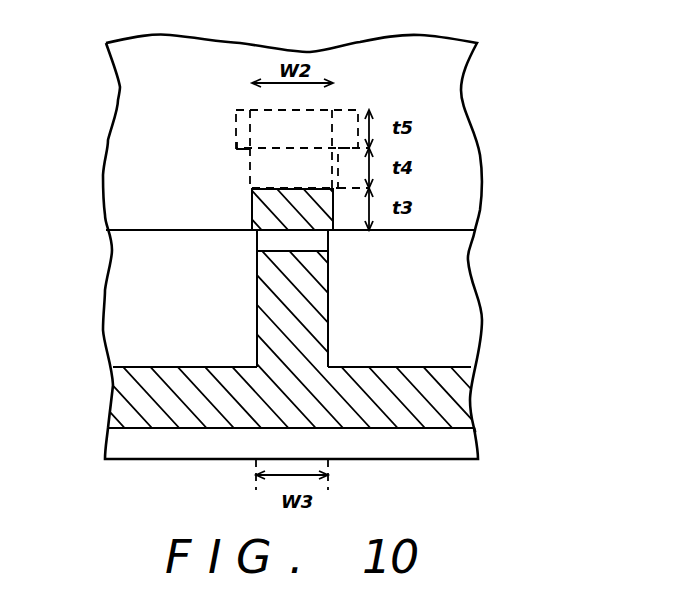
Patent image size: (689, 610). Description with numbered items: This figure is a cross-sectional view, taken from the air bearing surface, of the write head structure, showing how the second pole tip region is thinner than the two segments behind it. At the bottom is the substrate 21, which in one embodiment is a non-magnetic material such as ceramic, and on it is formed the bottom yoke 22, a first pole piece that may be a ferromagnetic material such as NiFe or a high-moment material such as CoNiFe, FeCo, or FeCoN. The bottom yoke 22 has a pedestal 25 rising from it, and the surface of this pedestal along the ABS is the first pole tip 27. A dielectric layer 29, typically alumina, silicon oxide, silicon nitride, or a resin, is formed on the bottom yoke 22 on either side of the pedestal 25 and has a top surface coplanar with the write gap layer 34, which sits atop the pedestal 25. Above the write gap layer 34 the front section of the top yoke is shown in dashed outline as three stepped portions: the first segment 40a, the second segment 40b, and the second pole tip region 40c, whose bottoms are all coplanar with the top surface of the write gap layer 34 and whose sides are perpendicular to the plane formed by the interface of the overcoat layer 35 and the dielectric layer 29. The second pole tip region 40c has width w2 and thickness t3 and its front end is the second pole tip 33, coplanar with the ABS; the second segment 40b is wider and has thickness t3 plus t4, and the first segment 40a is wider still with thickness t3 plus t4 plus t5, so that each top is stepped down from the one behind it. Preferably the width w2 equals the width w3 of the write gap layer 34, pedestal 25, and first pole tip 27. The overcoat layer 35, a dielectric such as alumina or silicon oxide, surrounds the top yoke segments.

The substrate 21 is at (450, 438).
The bottom yoke 22 is at (452, 398).
The pedestal 25 is at (258, 318).
The first pole tip 27 is at (313, 317).
The dielectric layer 29 is at (135, 282).
The second pole tip 33 is at (252, 210).
The write gap layer 34 is at (265, 243).
The overcoat layer 35 is at (460, 172).
The first segment 40a is at (248, 132).
The second segment 40b is at (248, 163).
The second pole tip region 40c is at (248, 203).